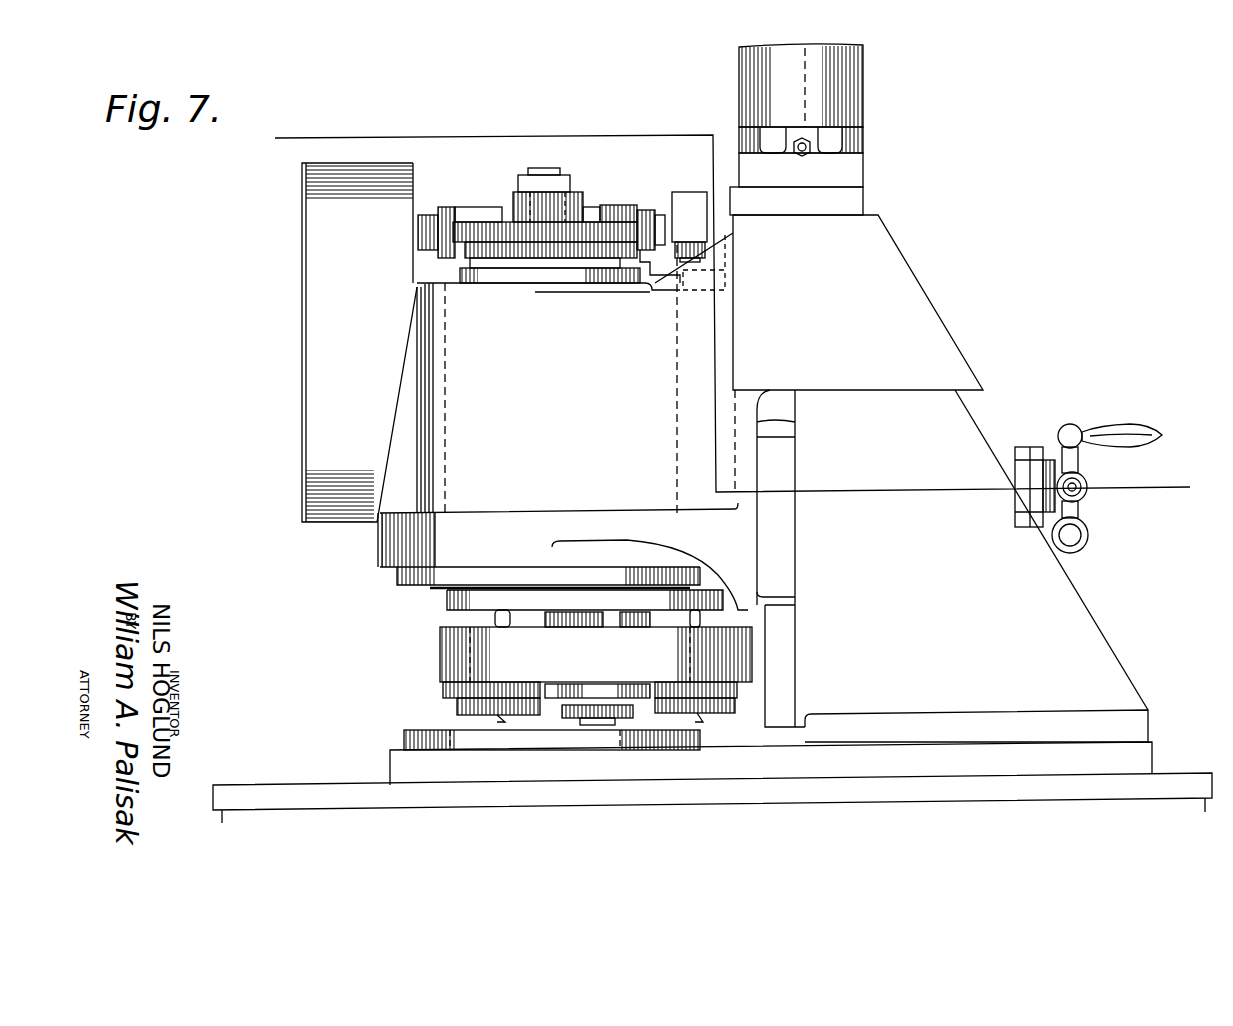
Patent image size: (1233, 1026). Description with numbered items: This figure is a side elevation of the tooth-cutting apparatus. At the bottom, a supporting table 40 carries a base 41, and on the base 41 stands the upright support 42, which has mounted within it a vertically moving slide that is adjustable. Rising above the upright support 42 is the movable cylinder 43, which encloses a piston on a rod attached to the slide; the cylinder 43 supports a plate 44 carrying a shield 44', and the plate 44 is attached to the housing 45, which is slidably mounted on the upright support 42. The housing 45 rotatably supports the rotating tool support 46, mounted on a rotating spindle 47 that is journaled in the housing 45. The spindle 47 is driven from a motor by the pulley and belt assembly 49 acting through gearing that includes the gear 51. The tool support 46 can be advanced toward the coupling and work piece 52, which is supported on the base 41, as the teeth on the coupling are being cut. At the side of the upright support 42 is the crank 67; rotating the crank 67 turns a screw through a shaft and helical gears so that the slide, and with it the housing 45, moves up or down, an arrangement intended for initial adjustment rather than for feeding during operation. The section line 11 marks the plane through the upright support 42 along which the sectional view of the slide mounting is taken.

The section line 11 is at (275, 138).
The supporting table 40 is at (318, 810).
The base 41 is at (1142, 752).
The upright support 42 is at (1082, 626).
The movable cylinder 43 is at (750, 76).
The plate 44 is at (824, 199).
The shield 44' is at (858, 352).
The housing 45 is at (455, 430).
The rotating tool support 46 is at (445, 647).
The rotating spindle 47 is at (580, 205).
The pulley and belt assembly 49 is at (312, 312).
The gear 51 is at (467, 232).
The coupling and work piece 52 is at (408, 737).
The crank 67 is at (1130, 428).